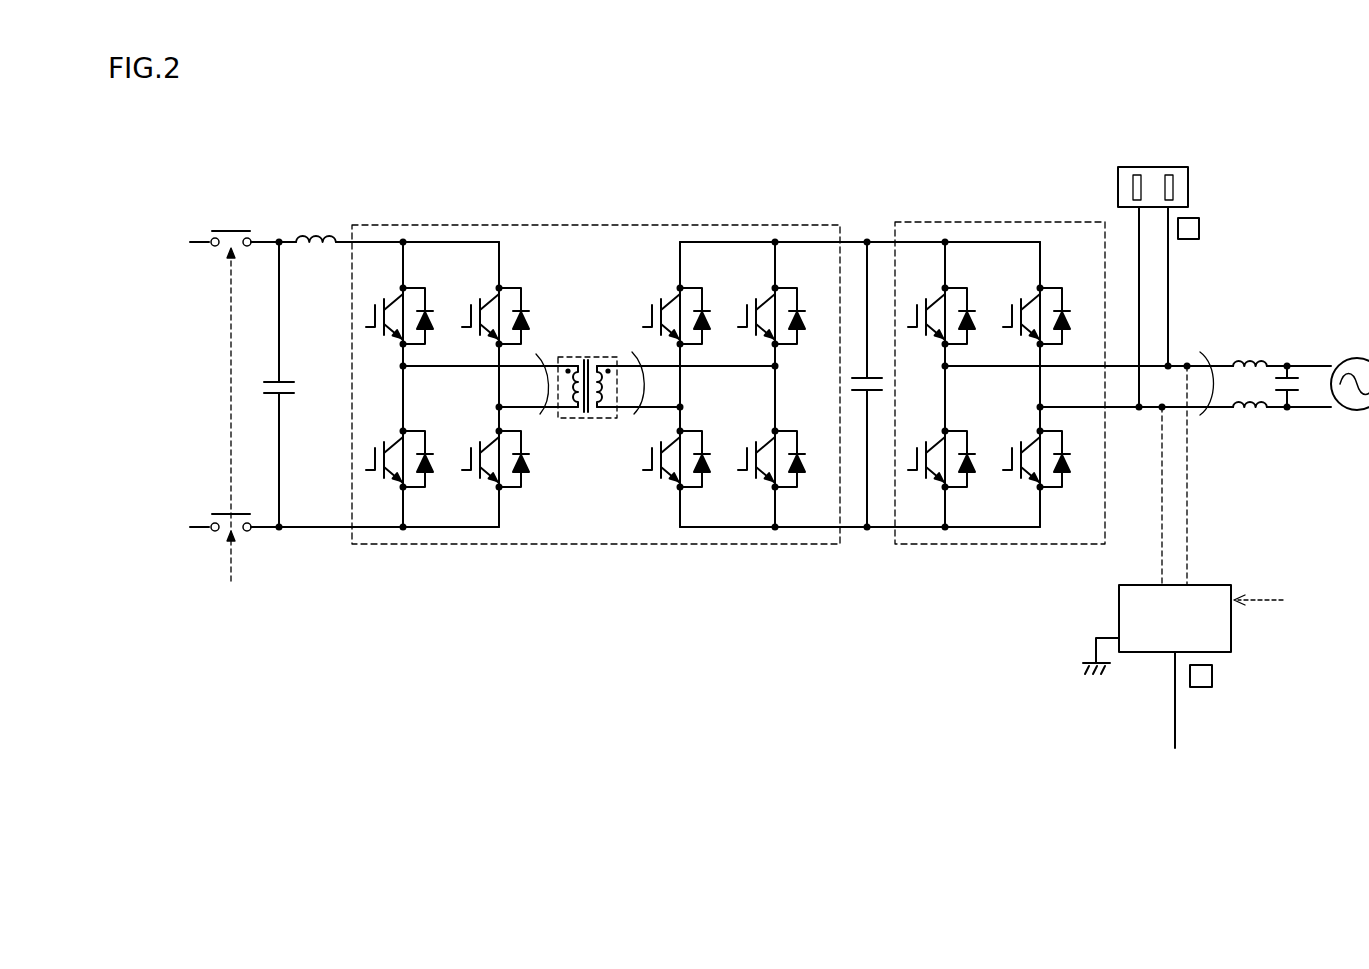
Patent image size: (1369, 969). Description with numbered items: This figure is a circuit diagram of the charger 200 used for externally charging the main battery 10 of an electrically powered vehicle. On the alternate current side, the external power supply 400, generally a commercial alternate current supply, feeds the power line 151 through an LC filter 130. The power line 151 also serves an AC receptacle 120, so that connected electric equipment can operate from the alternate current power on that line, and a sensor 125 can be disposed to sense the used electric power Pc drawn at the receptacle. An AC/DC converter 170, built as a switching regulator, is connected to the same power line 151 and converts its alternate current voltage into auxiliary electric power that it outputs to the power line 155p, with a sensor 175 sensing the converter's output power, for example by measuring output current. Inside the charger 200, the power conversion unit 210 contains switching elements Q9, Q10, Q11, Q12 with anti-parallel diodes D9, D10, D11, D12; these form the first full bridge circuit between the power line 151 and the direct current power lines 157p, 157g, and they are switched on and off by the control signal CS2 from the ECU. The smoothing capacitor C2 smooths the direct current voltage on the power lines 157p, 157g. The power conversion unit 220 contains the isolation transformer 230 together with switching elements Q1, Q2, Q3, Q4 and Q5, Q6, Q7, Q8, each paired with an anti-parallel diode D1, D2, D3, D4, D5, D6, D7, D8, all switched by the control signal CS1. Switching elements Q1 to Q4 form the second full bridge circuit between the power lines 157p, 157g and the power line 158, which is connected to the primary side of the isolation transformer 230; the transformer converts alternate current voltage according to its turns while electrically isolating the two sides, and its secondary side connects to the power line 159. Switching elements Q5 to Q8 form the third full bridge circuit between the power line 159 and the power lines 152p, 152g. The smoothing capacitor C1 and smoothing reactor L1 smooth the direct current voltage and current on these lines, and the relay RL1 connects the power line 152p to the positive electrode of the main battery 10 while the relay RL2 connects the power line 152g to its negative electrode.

The charger 200 is at (1110, 155).
The main battery 10 is at (222, 387).
The relay RL1 is at (232, 224).
The relay RL2 is at (225, 532).
The smoothing reactor L1 is at (312, 236).
The smoothing capacitor C1 is at (292, 381).
The smoothing capacitor C2 is at (884, 376).
The power conversion unit 220 is at (597, 222).
The power line 152p is at (376, 240).
The power line 152g is at (372, 530).
The power line 157p is at (722, 240).
The power line 157g is at (727, 530).
The power conversion unit 210 is at (996, 221).
The isolation transformer 230 is at (592, 355).
The power line 158 is at (634, 414).
The power line 159 is at (540, 414).
The switching element Q1 is at (652, 302).
The switching element Q2 is at (652, 474).
The switching element Q3 is at (747, 302).
The switching element Q4 is at (747, 445).
The switching element Q5 is at (376, 302).
The switching element Q6 is at (376, 445).
The switching element Q7 is at (472, 302).
The switching element Q8 is at (472, 445).
The power semiconductor switching element Q9 is at (917, 302).
The power semiconductor switching element Q10 is at (917, 445).
The power semiconductor switching element Q11 is at (1012, 302).
The power semiconductor switching element Q12 is at (1012, 445).
The anti-parallel diode D1 is at (708, 318).
The anti-parallel diode D2 is at (708, 461).
The anti-parallel diode D3 is at (803, 318).
The anti-parallel diode D4 is at (803, 461).
The anti-parallel diode D5 is at (431, 318).
The anti-parallel diode D6 is at (431, 461).
The anti-parallel diode D7 is at (527, 318).
The anti-parallel diode D8 is at (523, 488).
The anti-parallel diode D9 is at (973, 318).
The anti-parallel diode D10 is at (973, 461).
The anti-parallel diode D11 is at (1068, 318).
The anti-parallel diode D12 is at (1068, 461).
The control signal CS1 is at (596, 545).
The control signal CS2 is at (1000, 545).
The AC receptacle 120 is at (1190, 185).
The sensor 125 is at (1188, 241).
The used electric power Pc is at (1199, 228).
The LC filter 130 is at (1261, 338).
The power line 151 is at (1200, 415).
The external power supply 400 is at (1350, 357).
The AC/DC converter 170 is at (1231, 632).
The sensor 175 is at (1212, 676).
The power line 155p is at (1175, 722).